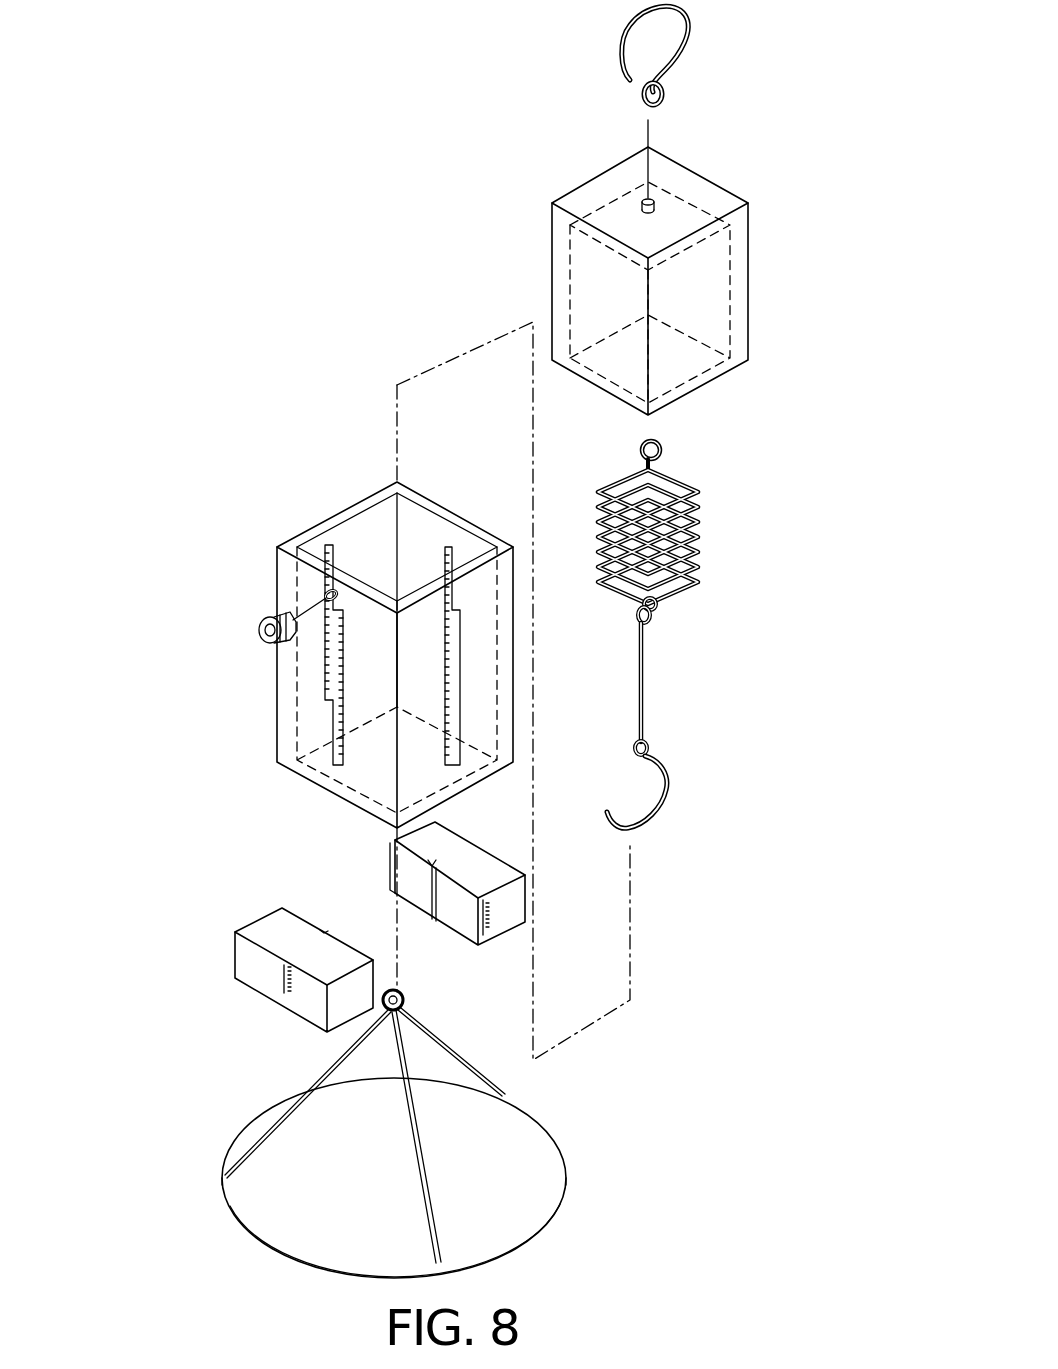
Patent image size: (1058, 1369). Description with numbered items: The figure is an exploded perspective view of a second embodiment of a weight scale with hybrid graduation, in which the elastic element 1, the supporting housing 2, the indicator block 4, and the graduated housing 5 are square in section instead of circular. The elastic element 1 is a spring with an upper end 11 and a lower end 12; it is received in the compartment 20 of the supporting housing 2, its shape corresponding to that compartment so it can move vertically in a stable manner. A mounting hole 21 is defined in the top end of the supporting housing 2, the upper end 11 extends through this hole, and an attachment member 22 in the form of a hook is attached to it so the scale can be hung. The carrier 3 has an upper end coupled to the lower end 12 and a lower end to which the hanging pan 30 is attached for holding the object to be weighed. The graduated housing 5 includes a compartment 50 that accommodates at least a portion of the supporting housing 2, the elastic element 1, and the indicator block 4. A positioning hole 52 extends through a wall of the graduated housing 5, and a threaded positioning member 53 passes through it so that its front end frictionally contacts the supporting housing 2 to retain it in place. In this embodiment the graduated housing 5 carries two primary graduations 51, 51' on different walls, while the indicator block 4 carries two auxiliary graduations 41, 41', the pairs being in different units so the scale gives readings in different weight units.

The elastic element 1 is at (715, 530).
The upper end 11 is at (662, 456).
The lower end 12 is at (660, 606).
The supporting housing 2 is at (732, 196).
The compartment 20 is at (700, 295).
The mounting hole 21 is at (658, 200).
The attachment member 22 is at (683, 20).
The carrier 3 is at (675, 716).
The hanging pan 30 is at (252, 1140).
The indicator block 4 is at (262, 902).
The auxiliary graduation 41 is at (244, 987).
The auxiliary graduation 41' is at (458, 918).
The graduated housing 5 is at (288, 520).
The compartment 50 is at (355, 522).
The primary graduation 51 is at (287, 655).
The primary graduation 51' is at (489, 688).
The positioning hole 52 is at (324, 594).
The positioning member 53 is at (262, 627).